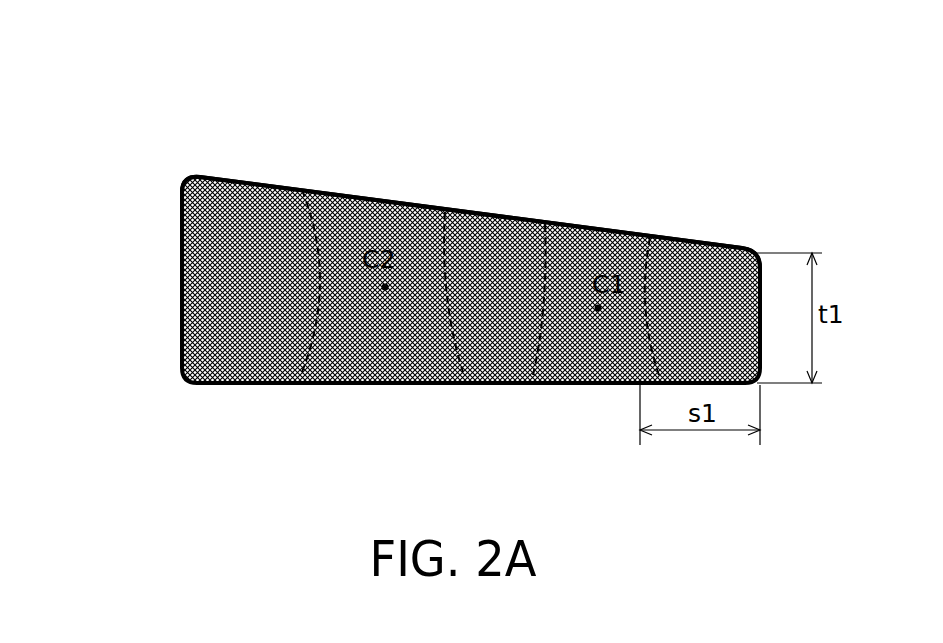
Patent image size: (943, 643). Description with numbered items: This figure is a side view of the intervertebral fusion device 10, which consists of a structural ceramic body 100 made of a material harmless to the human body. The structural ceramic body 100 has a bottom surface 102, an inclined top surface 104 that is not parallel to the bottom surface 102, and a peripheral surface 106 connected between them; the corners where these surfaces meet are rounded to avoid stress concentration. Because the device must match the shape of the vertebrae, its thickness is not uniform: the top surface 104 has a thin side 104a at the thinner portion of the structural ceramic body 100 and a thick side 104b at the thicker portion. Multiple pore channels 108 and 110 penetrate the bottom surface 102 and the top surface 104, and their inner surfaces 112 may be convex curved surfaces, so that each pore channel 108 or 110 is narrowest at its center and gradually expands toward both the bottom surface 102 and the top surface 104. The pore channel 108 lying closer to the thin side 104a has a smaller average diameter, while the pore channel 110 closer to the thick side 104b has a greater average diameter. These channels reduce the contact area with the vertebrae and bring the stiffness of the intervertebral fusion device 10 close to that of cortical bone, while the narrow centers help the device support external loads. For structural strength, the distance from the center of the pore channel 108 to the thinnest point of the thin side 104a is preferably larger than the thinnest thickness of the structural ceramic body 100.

The intervertebral fusion device 10 is at (200, 53).
The structural ceramic body 100 is at (203, 308).
The bottom surface 102 is at (500, 385).
The top surface 104 is at (367, 195).
The thin side 104a is at (748, 240).
The thick side 104b is at (200, 163).
The peripheral surface 106 is at (178, 273).
The pore channel 108 is at (643, 310).
The pore channel 110 is at (318, 270).
The inner surfaces 112 is at (572, 282).